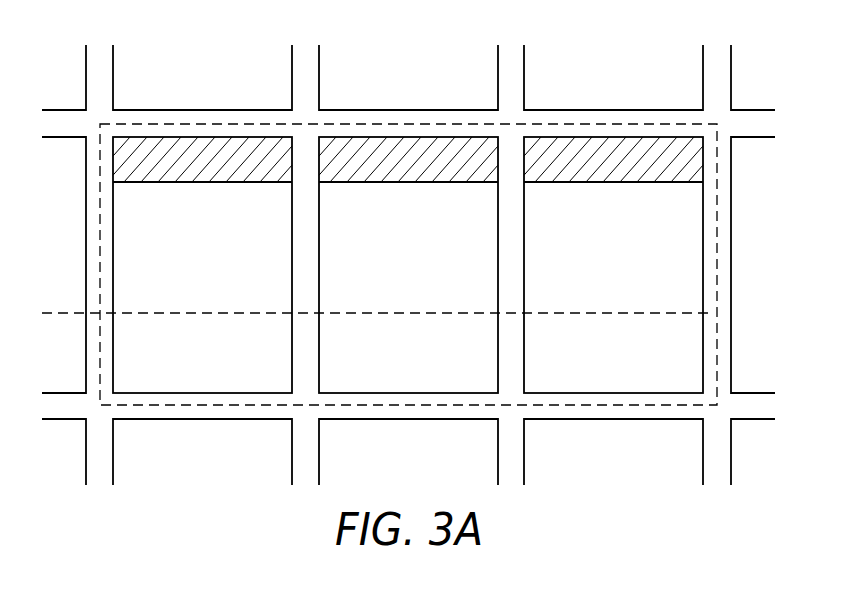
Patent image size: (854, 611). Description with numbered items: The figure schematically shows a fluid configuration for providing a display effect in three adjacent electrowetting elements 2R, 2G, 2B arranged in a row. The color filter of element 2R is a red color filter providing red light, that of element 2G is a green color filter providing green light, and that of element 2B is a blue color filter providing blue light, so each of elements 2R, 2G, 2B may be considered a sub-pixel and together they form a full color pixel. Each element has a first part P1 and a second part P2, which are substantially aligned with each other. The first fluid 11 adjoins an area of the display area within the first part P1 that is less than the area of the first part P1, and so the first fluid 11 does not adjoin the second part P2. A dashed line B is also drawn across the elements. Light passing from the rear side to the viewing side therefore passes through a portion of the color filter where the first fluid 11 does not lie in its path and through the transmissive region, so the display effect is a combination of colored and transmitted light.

The electrowetting element 2R is at (207, 382).
The electrowetting element 2G is at (412, 382).
The electrowetting element 2B is at (618, 382).
The first fluid 11 is at (245, 171).
The section line B is at (66, 318).
The first part P1 is at (162, 239).
The second part P2 is at (162, 382).